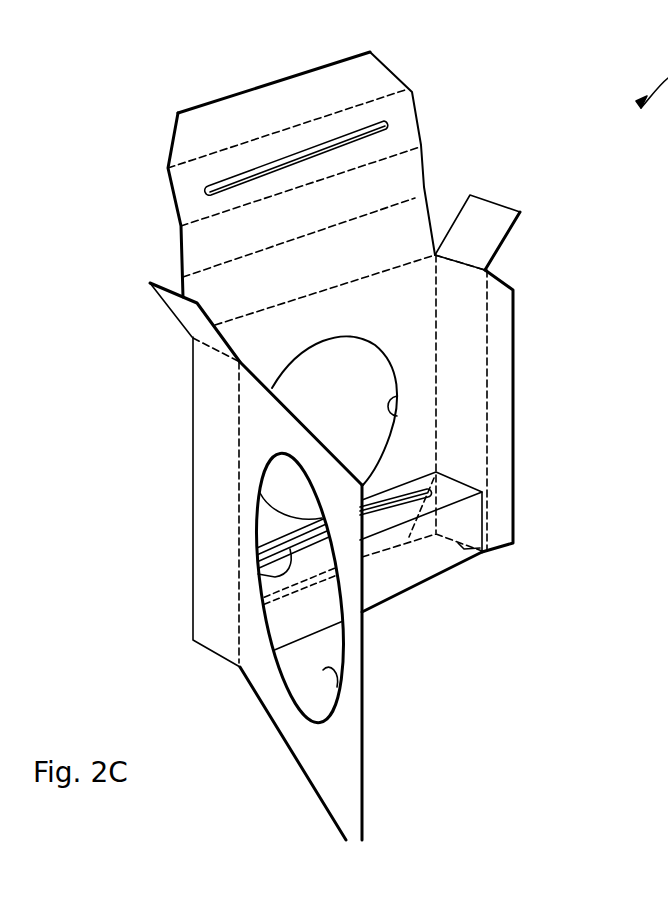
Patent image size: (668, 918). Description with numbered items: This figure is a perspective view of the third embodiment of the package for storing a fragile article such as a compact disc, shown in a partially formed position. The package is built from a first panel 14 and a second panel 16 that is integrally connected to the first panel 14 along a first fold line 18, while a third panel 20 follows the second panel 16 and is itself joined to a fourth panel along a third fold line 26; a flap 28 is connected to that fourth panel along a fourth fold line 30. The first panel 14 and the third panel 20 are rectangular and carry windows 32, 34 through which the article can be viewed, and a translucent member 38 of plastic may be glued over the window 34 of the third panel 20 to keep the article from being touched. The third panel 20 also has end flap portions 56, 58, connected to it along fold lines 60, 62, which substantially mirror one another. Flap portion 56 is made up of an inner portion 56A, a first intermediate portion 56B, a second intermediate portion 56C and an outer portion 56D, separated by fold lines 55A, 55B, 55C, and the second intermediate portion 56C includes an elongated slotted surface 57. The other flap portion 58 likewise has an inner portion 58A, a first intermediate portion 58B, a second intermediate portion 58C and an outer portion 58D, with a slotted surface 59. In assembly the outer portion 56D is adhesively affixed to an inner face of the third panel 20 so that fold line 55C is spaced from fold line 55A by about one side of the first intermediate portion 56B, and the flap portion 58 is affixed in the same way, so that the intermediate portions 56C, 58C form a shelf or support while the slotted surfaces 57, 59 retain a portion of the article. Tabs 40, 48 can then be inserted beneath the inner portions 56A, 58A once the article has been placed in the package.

The first panel 14 is at (297, 762).
The second panel 16 is at (202, 582).
The first fold line 18 is at (240, 415).
The third panel 20 is at (262, 362).
The third fold line 26 is at (437, 437).
The flap 28 is at (497, 300).
The fourth fold line 30 is at (490, 465).
The window 32 is at (240, 513).
The window 34 is at (398, 417).
The translucent member 38 is at (393, 361).
The tab 40 is at (177, 308).
The tab 48 is at (468, 235).
The fold line 55A is at (400, 201).
The fold line 55B is at (400, 151).
The fold line 55C is at (403, 90).
The flap portion 56 is at (184, 293).
The inner portion 56A is at (320, 290).
The first intermediate portion 56B is at (301, 200).
The second intermediate portion 56C is at (287, 138).
The outer portion 56D is at (273, 96).
The elongated slotted surface 57 is at (327, 140).
The flap portion 58 is at (432, 582).
The inner portion 58A is at (291, 572).
The first intermediate portion 58B is at (420, 529).
The second intermediate portion 58C is at (450, 492).
The outer portion 58D is at (370, 557).
The slotted surface 59 is at (258, 574).
The fold line 60 is at (378, 277).
The fold line 62 is at (390, 550).